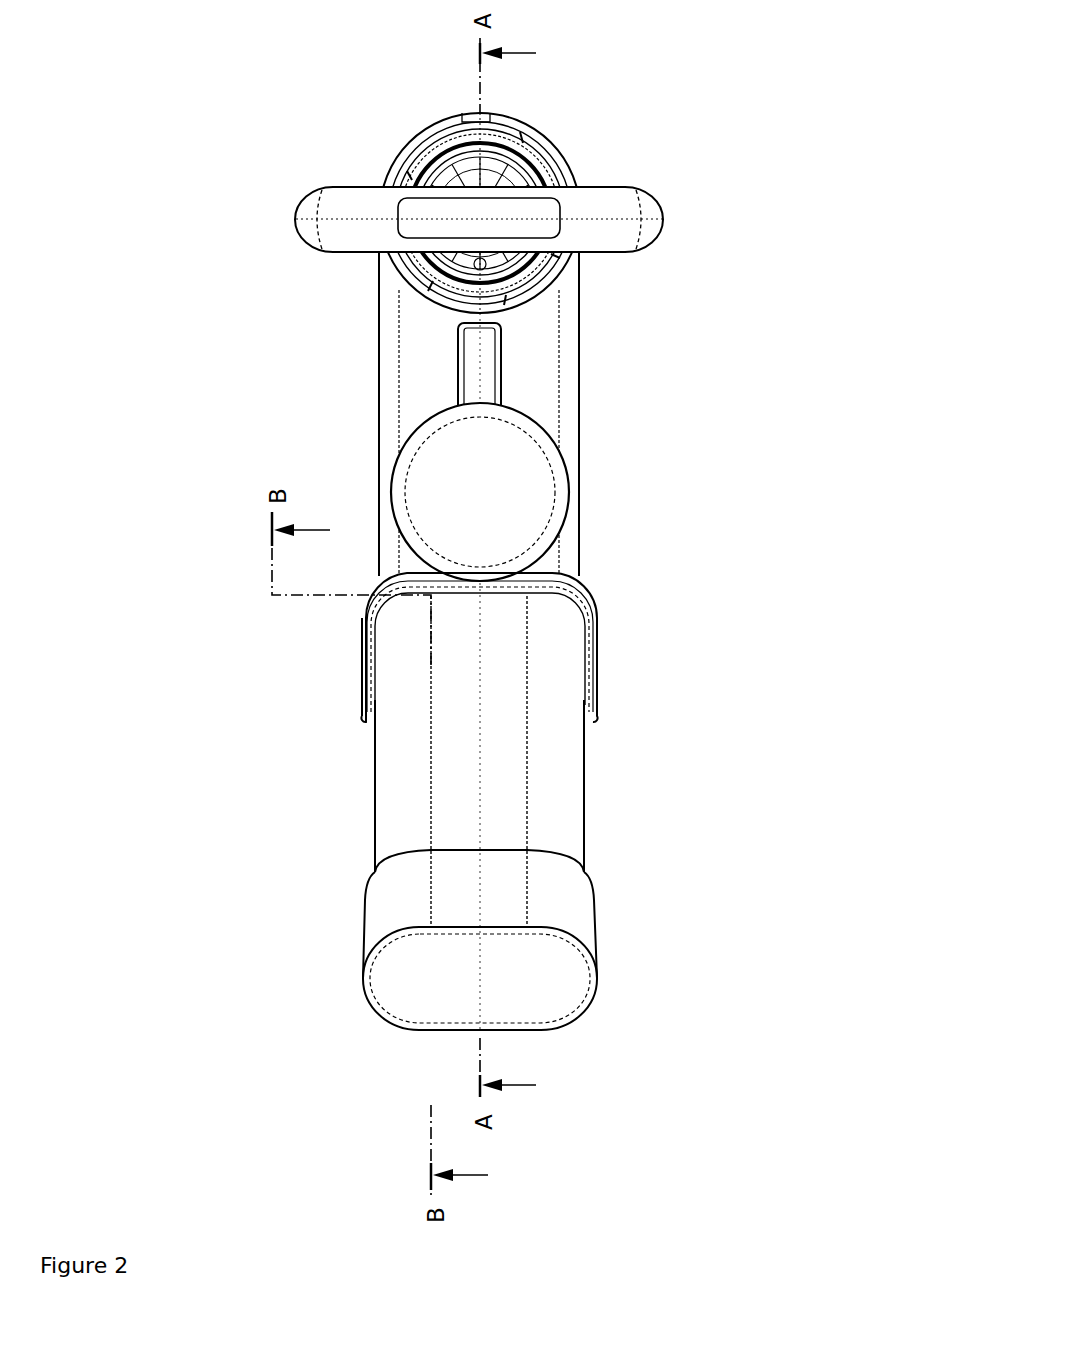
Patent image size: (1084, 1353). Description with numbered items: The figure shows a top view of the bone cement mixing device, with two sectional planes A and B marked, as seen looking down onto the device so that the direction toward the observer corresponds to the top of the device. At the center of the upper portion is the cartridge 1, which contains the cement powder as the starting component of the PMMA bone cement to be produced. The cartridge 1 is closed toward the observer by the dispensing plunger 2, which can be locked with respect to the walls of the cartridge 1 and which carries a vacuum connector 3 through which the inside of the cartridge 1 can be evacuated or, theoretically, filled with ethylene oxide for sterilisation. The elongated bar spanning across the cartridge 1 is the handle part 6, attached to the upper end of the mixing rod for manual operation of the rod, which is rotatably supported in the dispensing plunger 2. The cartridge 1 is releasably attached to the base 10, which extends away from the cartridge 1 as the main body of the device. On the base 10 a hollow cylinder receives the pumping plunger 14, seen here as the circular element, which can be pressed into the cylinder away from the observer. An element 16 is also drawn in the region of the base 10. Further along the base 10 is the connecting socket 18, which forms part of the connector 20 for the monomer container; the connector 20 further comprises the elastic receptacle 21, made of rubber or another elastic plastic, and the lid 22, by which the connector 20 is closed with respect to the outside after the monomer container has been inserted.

The cartridge 1 is at (552, 287).
The dispensing plunger 2 is at (542, 168).
The vacuum connector 3 is at (543, 268).
The handle part 6 is at (582, 212).
The base 10 is at (567, 361).
The pumping plunger 14 is at (480, 491).
The pin / connecting element 16 is at (480, 363).
The connecting socket 18 is at (594, 623).
The connector 20 is at (246, 788).
The elastic receptacle 21 is at (487, 718).
The lid 22 is at (500, 970).